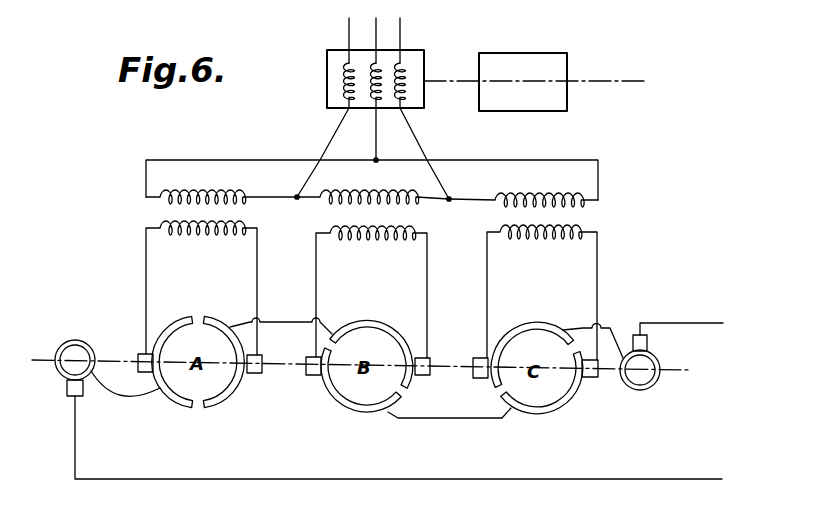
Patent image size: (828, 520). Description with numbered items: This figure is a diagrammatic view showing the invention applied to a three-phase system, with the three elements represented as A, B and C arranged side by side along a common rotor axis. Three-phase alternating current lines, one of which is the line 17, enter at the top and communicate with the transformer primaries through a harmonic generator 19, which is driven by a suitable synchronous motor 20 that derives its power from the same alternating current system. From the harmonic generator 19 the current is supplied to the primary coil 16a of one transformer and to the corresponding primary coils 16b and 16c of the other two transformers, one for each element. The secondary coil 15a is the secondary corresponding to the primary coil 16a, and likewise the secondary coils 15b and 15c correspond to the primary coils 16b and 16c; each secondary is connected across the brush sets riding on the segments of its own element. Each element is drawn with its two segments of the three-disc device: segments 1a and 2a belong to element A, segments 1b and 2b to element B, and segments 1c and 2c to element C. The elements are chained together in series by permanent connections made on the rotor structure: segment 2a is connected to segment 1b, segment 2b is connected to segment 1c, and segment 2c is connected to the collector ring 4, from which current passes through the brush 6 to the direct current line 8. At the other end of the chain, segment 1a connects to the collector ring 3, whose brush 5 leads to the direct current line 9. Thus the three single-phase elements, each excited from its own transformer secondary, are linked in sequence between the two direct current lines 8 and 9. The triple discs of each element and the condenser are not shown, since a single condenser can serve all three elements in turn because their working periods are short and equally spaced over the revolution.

The alternating current line 17 is at (357, 40).
The harmonic generator 19 is at (330, 77).
The synchronous motor 20 is at (523, 82).
The primary coil 16a is at (221, 188).
The primary coil 16b is at (373, 188).
The primary coil 16c is at (523, 189).
The secondary coil 15a is at (201, 288).
The secondary coil 15b is at (371, 292).
The secondary coil 15c is at (542, 292).
The segment 1a is at (188, 318).
The segment 2a is at (226, 404).
The segment 1b is at (363, 320).
The segment 2b is at (336, 403).
The segment 1c is at (556, 409).
The segment 2c is at (534, 320).
The collector ring 3 is at (62, 348).
The collector ring 4 is at (645, 386).
The brush 5 is at (67, 386).
The brush 6 is at (648, 345).
The direct current line 8 is at (684, 320).
The direct current line 9 is at (398, 437).